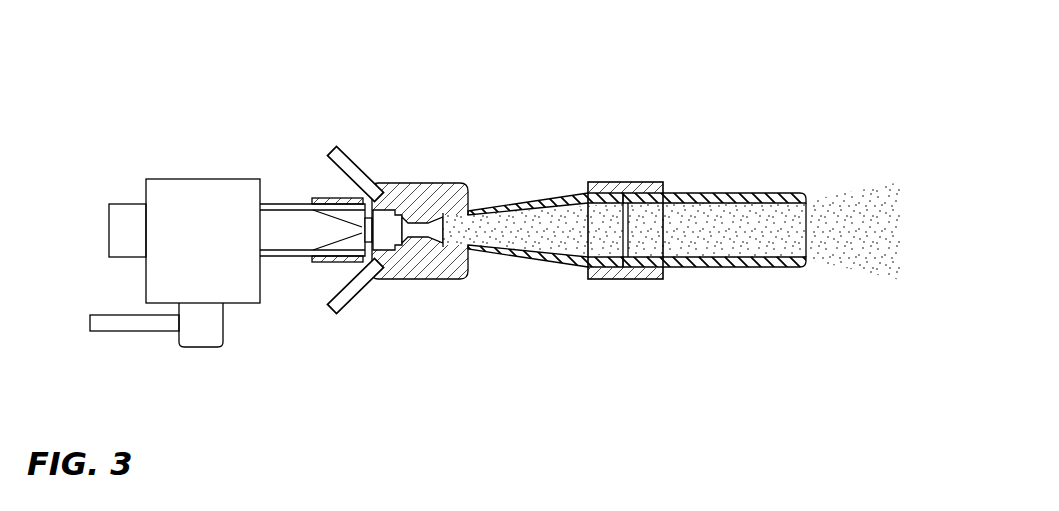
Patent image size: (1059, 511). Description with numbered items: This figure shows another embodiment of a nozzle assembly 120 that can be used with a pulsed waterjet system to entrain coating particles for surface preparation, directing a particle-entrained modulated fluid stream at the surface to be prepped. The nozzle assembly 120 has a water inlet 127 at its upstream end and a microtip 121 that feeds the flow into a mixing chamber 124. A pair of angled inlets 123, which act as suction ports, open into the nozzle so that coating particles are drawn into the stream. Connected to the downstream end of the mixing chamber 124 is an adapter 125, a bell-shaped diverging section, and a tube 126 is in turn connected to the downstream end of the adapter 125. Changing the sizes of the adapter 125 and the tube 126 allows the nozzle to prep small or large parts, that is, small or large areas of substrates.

The nozzle assembly 120 is at (706, 104).
The microtip 121 is at (327, 222).
The angled inlets 123 is at (343, 163).
The mixing chamber 124 is at (443, 193).
The adapter 125 is at (560, 243).
The tube 126 is at (743, 193).
The water inlet 127 is at (105, 331).